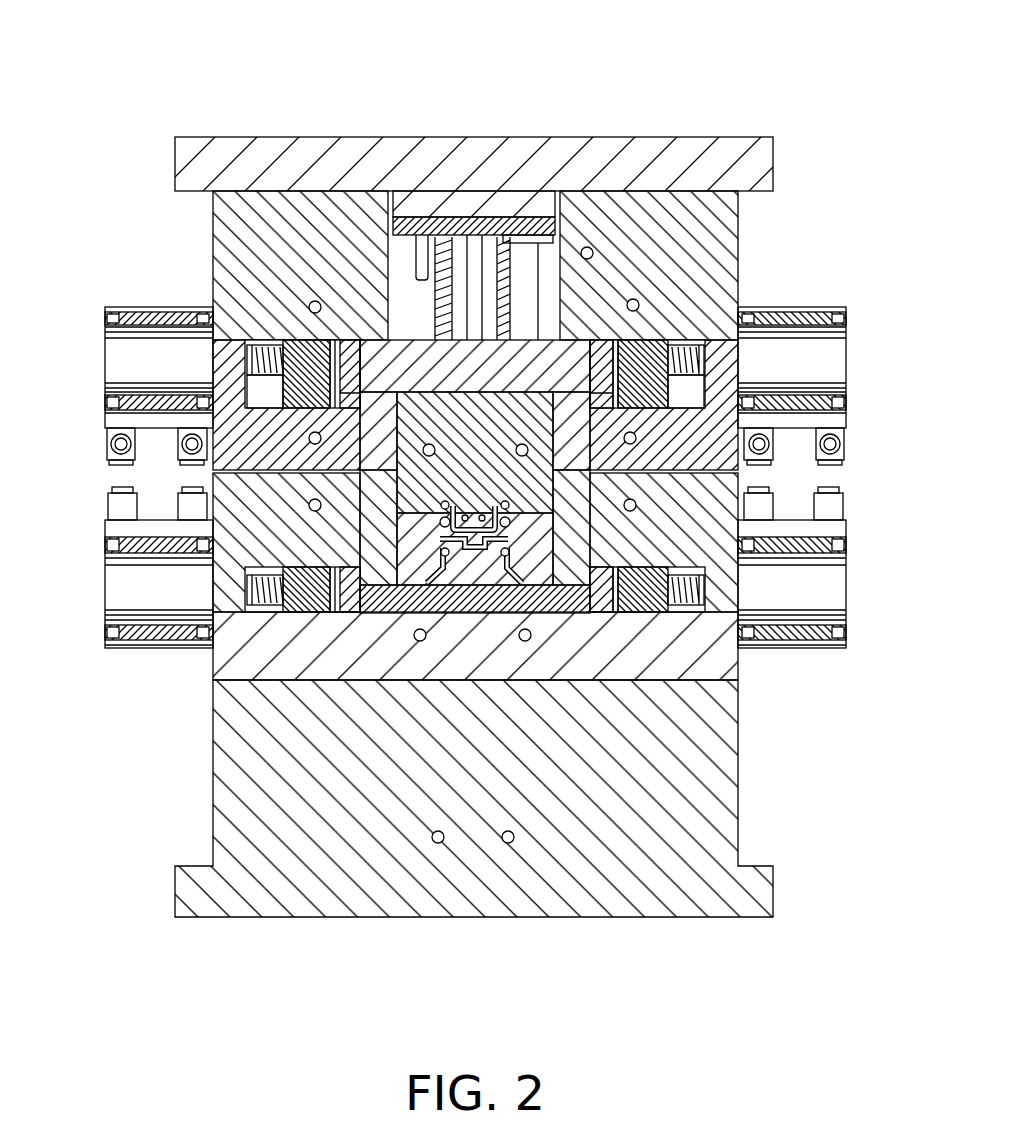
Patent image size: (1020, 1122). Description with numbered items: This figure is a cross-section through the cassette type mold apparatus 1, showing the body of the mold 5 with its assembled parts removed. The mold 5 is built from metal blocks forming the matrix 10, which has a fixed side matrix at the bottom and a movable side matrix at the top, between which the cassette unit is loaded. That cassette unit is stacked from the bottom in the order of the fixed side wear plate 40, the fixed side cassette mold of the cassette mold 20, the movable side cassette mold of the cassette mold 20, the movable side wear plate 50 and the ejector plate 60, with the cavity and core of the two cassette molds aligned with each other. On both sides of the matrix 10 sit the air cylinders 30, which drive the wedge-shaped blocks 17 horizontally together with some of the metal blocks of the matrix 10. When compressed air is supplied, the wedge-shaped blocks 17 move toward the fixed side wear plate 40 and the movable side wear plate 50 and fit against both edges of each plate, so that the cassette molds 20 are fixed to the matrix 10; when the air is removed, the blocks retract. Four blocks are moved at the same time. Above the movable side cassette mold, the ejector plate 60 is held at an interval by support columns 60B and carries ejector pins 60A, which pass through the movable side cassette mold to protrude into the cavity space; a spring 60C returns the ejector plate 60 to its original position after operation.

The cassette type mold apparatus 1 is at (690, 97).
The mold 5 is at (752, 243).
The matrix 10 is at (702, 202).
The wedge-shaped block 17 is at (283, 363).
The cassette mold 20 is at (333, 387).
The air cylinder 30 is at (160, 308).
The fixed side wear plate 40 is at (670, 682).
The movable side wear plate 50 is at (400, 340).
The ejector plate 60 is at (482, 198).
The ejector pin 60A is at (470, 247).
The support column 60B is at (523, 242).
The spring 60C is at (537, 275).